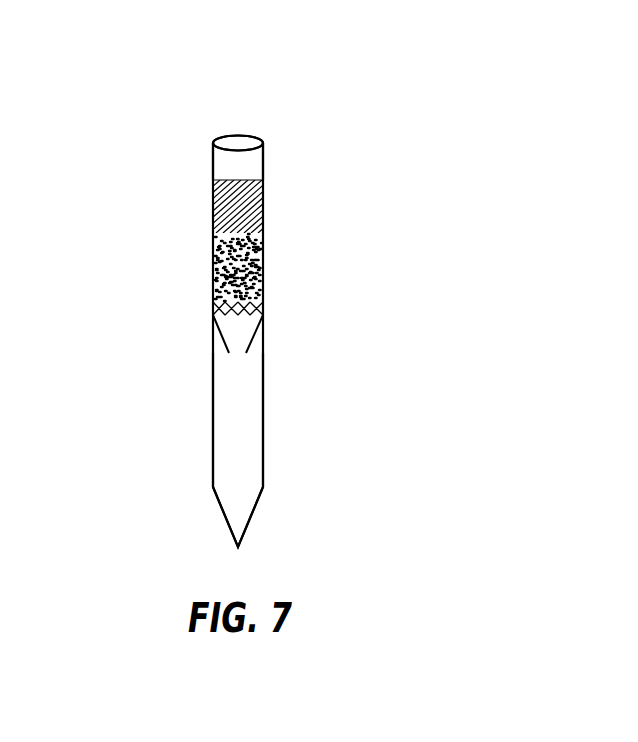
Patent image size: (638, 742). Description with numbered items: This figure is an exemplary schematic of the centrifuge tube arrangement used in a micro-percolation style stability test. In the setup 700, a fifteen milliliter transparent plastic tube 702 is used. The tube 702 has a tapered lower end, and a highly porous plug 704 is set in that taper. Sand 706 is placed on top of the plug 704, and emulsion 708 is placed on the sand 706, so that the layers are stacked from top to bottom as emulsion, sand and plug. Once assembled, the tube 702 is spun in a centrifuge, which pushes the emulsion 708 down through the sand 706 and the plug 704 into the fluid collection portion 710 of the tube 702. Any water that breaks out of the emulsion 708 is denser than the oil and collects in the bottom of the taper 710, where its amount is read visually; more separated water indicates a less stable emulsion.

The setup 700 is at (186, 114).
The transparent plastic tube 702 is at (266, 158).
The porous plug 704 is at (212, 311).
The sand 706 is at (212, 268).
The emulsion 708 is at (212, 208).
The fluid collection portion 710 is at (225, 425).